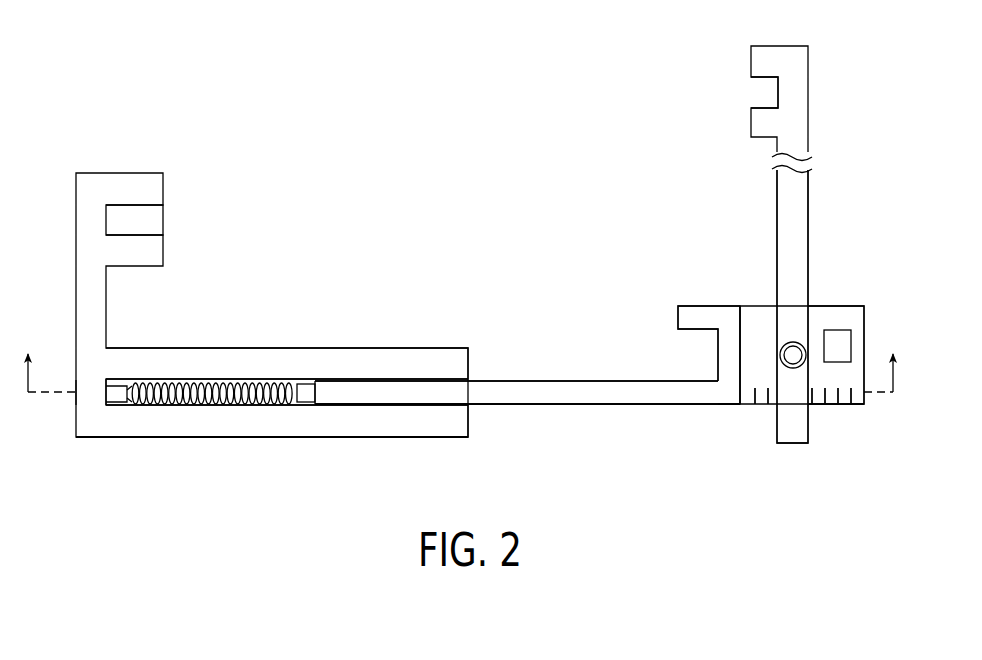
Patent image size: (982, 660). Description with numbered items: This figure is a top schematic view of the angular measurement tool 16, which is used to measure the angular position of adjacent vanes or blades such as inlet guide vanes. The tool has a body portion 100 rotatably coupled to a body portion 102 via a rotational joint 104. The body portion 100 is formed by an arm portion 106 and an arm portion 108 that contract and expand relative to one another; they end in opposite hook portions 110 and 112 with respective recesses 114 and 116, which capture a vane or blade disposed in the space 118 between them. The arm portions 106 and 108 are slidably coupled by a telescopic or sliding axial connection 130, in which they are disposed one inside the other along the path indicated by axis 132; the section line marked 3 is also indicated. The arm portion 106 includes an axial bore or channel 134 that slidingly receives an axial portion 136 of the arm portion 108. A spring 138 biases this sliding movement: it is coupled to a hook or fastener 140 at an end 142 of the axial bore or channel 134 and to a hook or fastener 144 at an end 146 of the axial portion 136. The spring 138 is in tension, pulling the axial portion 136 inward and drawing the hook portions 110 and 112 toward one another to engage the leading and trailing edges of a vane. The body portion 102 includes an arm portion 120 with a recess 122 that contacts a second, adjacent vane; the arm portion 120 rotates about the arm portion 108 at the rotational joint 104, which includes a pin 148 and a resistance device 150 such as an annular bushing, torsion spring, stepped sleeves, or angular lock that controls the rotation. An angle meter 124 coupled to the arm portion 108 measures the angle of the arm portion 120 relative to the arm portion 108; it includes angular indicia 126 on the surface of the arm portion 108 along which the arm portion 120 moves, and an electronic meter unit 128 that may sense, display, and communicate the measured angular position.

The section line 3- 3 is at (460, 356).
The angular measurement tool 16 is at (517, 48).
The body portion 100 is at (190, 490).
The body portion 102 is at (836, 92).
The rotational joint 104 is at (783, 362).
The arm portion 106 is at (137, 437).
The arm portion 108 is at (527, 405).
The hook portion 110 is at (172, 160).
The hook portion 112 is at (635, 325).
The recess 114 is at (152, 235).
The recess 116 is at (690, 370).
The space 118 is at (462, 285).
The arm portion 120 is at (809, 250).
The recess 122 is at (758, 95).
The angle meter 124 is at (845, 425).
The indicia 126 is at (820, 408).
The electronic meter unit 128 is at (838, 338).
The telescopic or sliding axial connection 130 is at (410, 437).
The axis 132 is at (55, 394).
The axial bore or channel 134 is at (197, 379).
The axial portion 136 is at (520, 381).
The spring 138 is at (201, 406).
The hook or fastener 140 is at (108, 403).
The end 142 is at (107, 380).
The hook or fastener 144 is at (303, 384).
The end 146 is at (322, 380).
The pin 148 is at (782, 355).
The resistance device 150 is at (793, 342).